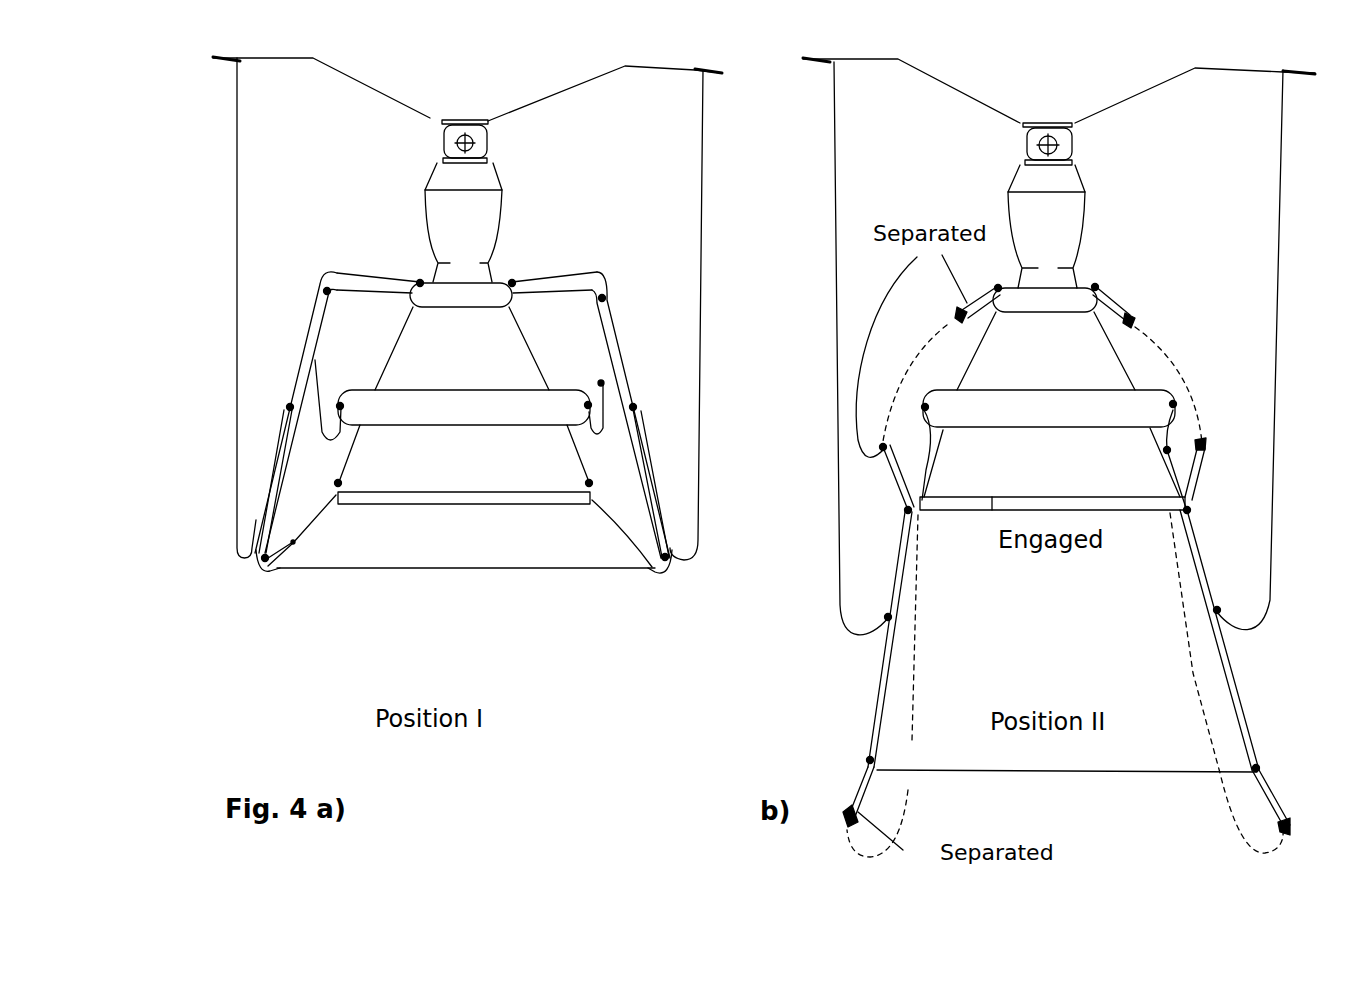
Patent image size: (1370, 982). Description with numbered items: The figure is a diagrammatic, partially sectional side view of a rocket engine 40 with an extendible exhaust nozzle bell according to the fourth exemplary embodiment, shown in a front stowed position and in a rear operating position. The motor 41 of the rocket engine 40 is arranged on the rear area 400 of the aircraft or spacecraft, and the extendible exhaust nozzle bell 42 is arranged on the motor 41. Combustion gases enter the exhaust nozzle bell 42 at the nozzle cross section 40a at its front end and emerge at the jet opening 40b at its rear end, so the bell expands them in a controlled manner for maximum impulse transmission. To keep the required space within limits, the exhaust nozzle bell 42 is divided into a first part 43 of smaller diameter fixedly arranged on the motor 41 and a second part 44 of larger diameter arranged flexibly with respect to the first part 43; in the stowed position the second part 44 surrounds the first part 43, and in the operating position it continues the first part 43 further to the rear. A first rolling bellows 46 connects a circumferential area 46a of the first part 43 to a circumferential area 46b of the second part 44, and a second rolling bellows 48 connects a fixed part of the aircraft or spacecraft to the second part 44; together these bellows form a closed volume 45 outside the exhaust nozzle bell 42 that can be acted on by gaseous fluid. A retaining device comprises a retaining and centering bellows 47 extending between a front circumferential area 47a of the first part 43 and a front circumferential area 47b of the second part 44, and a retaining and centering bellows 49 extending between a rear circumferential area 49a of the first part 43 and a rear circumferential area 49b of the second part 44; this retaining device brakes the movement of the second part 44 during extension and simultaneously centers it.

The rear area of the aircraft or spacecraft 400 is at (487, 112).
The motor 41 is at (476, 176).
The rocket engine 40 is at (213, 429).
The nozzle cross section 40a is at (462, 268).
The jet opening 40b is at (767, 694).
The extendible exhaust nozzle bell 42 is at (770, 462).
The first part of the exhaust nozzle bell 43 is at (412, 463).
The second part of the exhaust nozzle bell 44 is at (587, 550).
The closed volume 45 is at (677, 348).
The first rolling bellows 46 is at (603, 383).
The circumferential area of the first part 46a is at (601, 402).
The circumferential area of the second part 46b is at (614, 298).
The retaining and centering bellows 47 is at (572, 268).
The front circumferential area of the first part 47a is at (418, 278).
The front circumferential area of the second part 47b is at (315, 296).
The second rolling bellows 48 is at (703, 263).
The retaining and centering bellows 49 is at (295, 547).
The rear circumferential area of the first part 49a is at (336, 483).
The rear circumferential area of the second part 49b is at (243, 563).